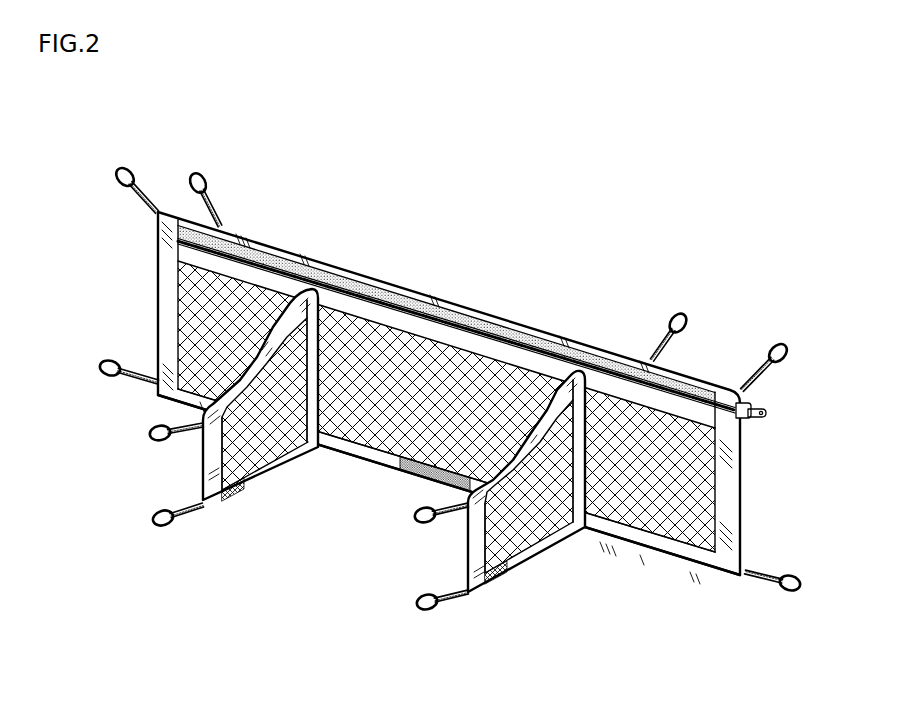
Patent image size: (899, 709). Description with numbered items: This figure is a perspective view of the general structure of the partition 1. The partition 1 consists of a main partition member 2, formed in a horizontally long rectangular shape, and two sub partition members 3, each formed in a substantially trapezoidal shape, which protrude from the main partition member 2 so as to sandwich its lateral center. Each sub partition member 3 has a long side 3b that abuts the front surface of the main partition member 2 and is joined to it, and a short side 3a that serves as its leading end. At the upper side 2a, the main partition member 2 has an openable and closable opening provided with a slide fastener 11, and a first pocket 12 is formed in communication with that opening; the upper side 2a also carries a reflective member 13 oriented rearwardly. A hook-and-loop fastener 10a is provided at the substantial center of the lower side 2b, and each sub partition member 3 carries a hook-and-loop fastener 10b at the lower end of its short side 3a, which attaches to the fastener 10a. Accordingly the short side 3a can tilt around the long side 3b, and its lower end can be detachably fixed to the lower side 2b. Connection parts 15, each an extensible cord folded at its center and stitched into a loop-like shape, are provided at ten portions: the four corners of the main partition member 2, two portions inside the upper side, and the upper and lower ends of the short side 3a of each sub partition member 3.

The partition 1 is at (468, 246).
The main partition member 2 is at (272, 226).
The upper side 2a is at (369, 277).
The lower side 2b is at (652, 553).
The sub partition member 3 is at (452, 540).
The short side 3a is at (208, 452).
The long side 3b is at (314, 298).
The hook-and-loop fastener 10a is at (400, 471).
The hook-and-loop fastener 10b is at (224, 498).
The slide fastener 11 is at (510, 343).
The first pocket 12 is at (472, 329).
The reflective member 13 is at (410, 300).
The connection part 15 is at (190, 170).